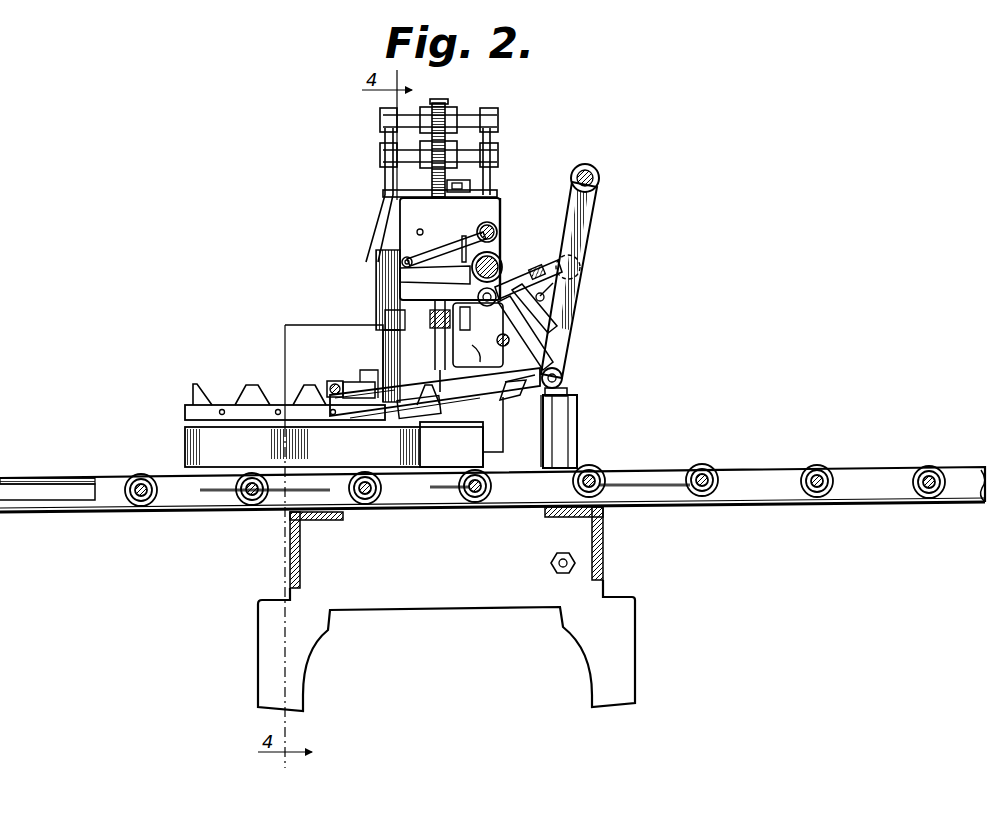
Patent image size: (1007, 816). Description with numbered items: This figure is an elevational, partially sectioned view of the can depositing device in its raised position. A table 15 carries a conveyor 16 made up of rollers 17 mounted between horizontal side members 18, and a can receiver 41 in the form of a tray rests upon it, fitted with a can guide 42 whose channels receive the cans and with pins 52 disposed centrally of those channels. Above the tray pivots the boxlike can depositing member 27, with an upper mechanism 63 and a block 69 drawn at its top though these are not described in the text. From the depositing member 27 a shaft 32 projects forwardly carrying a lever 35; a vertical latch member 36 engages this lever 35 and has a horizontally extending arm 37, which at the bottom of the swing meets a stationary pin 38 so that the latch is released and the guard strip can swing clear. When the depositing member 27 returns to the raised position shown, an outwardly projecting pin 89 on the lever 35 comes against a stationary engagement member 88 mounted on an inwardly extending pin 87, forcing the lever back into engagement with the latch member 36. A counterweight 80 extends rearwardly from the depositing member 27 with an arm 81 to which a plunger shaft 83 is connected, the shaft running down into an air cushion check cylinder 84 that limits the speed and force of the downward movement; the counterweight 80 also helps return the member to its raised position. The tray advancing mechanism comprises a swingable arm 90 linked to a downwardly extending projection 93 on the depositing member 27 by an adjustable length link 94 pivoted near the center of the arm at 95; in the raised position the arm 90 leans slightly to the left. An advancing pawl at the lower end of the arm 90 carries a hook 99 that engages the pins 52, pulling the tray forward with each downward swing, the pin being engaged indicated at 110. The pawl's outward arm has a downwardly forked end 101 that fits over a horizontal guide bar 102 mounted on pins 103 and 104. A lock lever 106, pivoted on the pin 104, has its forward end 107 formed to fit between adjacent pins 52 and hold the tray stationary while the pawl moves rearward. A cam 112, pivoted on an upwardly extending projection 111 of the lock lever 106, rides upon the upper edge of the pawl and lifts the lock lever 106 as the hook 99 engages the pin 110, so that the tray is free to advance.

The table 15 is at (603, 562).
The conveyor 16 is at (752, 478).
The rollers 17 is at (817, 481).
The horizontal side members 18 is at (763, 495).
The can depositing member 27 is at (497, 194).
The shaft 32 is at (400, 262).
The lever 35 is at (412, 258).
The latch member 36 is at (500, 235).
The horizontal arm 37 is at (412, 288).
The stationary pin 38 is at (508, 341).
The can receiver 41 is at (185, 438).
The can guide 42 is at (222, 409).
The pins 52 is at (226, 408).
The gear housing 63 is at (445, 135).
The block 69 is at (470, 187).
The counterweight 80 is at (578, 336).
The arm 81 is at (580, 330).
The plunger shaft 83 is at (563, 371).
The air cushion check cylinder 84 is at (562, 432).
The inwardly extending pin 87 is at (500, 227).
The stationary engagement member 88 is at (477, 230).
The outwardly projecting pin 89 is at (400, 274).
The swingable arm 90 is at (565, 288).
The downwardly extending projection 93 is at (480, 307).
The adjustable length link 94 is at (562, 272).
The pivot 95 is at (582, 260).
The hook 99 is at (352, 418).
The downwardly forked end 101 is at (370, 378).
The horizontal guide bar 102 is at (507, 400).
The pin 103 is at (335, 382).
The pin 104 is at (513, 398).
The lock lever 106 is at (457, 410).
The forward end of lock lever 107 is at (418, 418).
The pin 110 is at (372, 418).
The upwardly extending projection 111 is at (464, 347).
The cam 112 is at (448, 378).